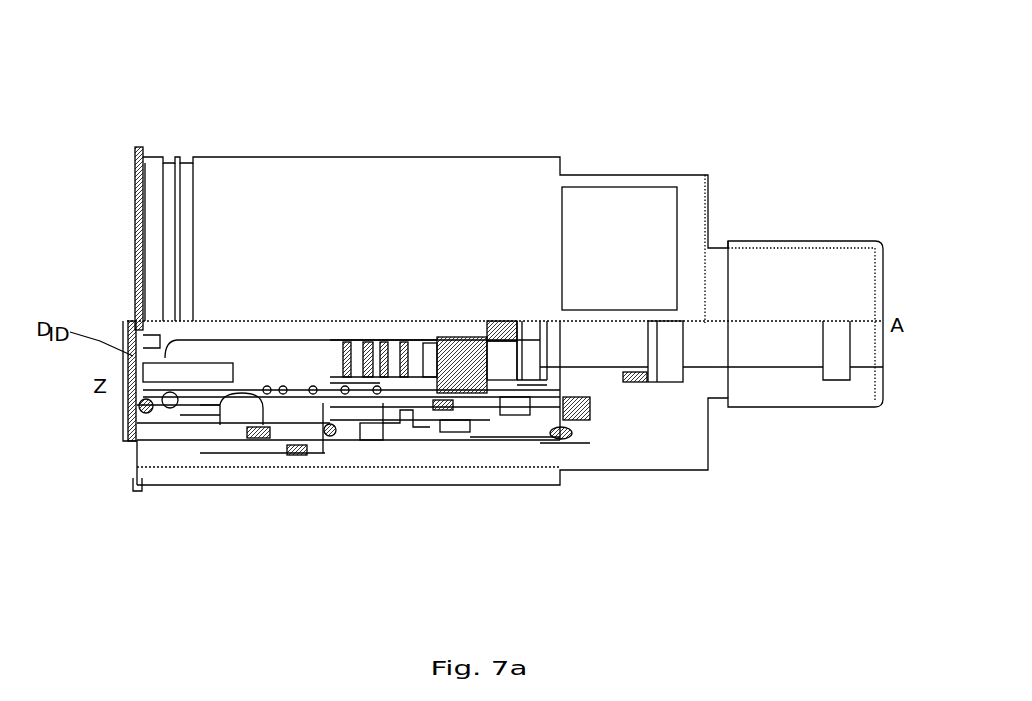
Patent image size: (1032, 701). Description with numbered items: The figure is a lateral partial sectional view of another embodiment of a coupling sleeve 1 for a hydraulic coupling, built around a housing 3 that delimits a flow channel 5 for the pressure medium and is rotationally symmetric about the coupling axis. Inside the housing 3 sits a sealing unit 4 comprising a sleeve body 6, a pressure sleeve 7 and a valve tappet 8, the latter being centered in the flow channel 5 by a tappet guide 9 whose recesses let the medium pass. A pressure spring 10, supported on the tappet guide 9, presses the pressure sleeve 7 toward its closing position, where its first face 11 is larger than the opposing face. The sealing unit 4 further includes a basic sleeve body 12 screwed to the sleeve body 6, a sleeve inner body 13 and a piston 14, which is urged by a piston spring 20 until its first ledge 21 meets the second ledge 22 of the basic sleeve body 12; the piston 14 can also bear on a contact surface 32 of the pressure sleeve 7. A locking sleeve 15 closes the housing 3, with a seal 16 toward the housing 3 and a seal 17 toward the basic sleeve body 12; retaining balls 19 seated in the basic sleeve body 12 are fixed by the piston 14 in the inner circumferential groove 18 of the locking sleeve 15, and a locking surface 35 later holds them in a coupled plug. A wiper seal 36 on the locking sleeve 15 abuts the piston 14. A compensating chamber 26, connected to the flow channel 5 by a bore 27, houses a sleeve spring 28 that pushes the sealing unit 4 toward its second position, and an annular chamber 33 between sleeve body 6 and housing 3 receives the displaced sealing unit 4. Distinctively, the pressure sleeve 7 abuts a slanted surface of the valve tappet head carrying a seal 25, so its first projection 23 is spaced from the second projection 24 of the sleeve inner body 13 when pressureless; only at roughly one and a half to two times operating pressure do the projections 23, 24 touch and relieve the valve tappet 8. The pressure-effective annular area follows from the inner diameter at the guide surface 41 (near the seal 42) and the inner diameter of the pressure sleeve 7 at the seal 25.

The coupling sleeve 1 is at (763, 124).
The housing 3 is at (797, 390).
The sealing unit 4 is at (457, 442).
The flow channel 5 is at (765, 348).
The sleeve body 6 is at (632, 382).
The pressure sleeve 7 is at (237, 355).
The valve tappet 8 is at (412, 330).
The tappet guide 9 is at (477, 357).
The pressure spring 10 is at (425, 348).
The first face 11 is at (360, 360).
The basic sleeve body 12 is at (325, 425).
The sleeve inner body 13 is at (470, 420).
The piston 14 is at (165, 355).
The locking sleeve 15 is at (153, 414).
The seal 16 is at (293, 448).
The seal 17 is at (268, 430).
The inner circumferential groove 18 is at (170, 410).
The retaining balls 19 is at (225, 400).
The piston spring 20 is at (383, 410).
The first ledge 21 is at (243, 403).
The second ledge 22 is at (205, 407).
The first projection 23 is at (303, 355).
The second projection 24 is at (247, 355).
The seal 25 is at (150, 358).
The compensating chamber 26 is at (430, 437).
The bore 27 is at (522, 420).
The sleeve spring 28 is at (335, 423).
The contact surface 32 is at (220, 355).
The annular chamber 33 is at (587, 420).
The locking surface 35 is at (230, 420).
The wiper seal 36 is at (138, 403).
The guide surface 41 is at (387, 360).
The seal 42 is at (328, 345).